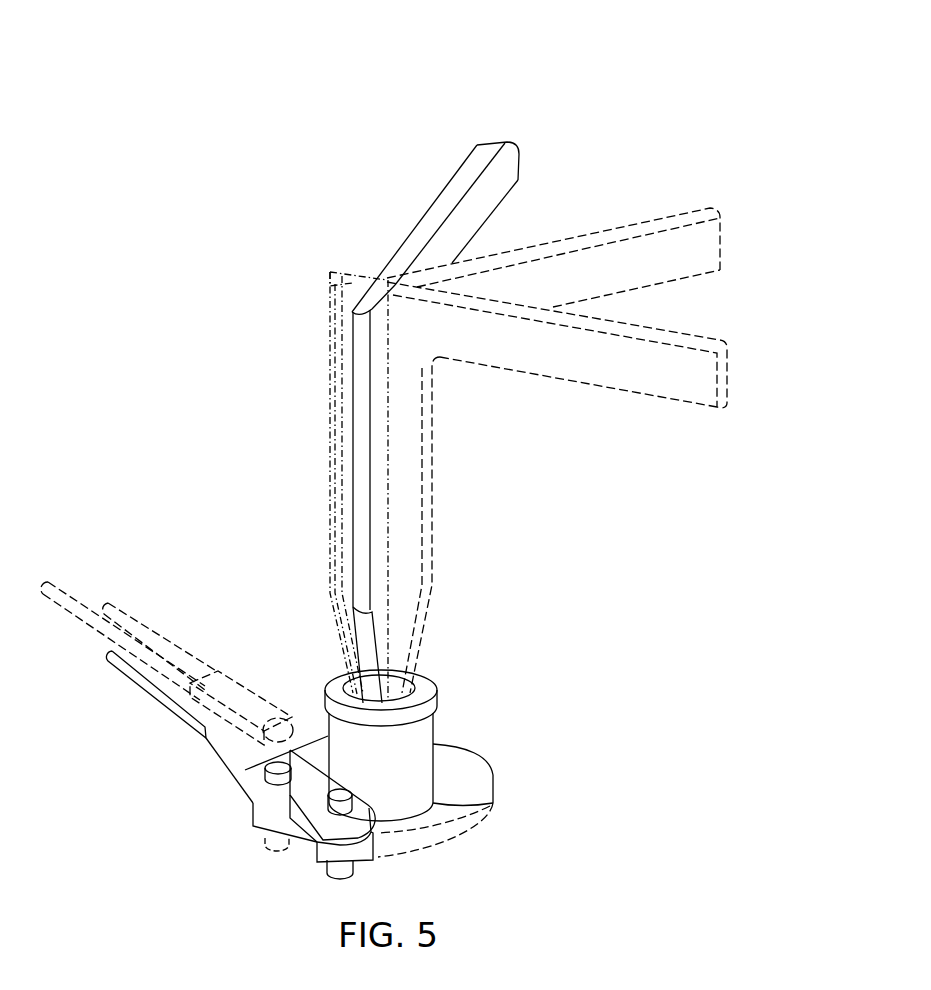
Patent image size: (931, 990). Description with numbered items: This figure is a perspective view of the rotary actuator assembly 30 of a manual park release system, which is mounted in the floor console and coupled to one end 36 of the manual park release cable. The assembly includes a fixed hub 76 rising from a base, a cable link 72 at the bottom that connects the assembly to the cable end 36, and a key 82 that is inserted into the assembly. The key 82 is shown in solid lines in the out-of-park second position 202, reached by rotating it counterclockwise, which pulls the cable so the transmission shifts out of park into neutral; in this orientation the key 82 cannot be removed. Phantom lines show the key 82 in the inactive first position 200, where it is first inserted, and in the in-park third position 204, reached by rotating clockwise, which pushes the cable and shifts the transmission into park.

The rotary actuator assembly 30 is at (101, 83).
The one end of the manual park release cable 36 is at (90, 674).
The cable link 72 is at (252, 829).
The fixed hub 76 is at (415, 756).
The key 82 is at (326, 238).
The inactive first position 200 is at (746, 199).
The out-of-park second position 202 is at (512, 120).
The in-park third position 204 is at (753, 346).